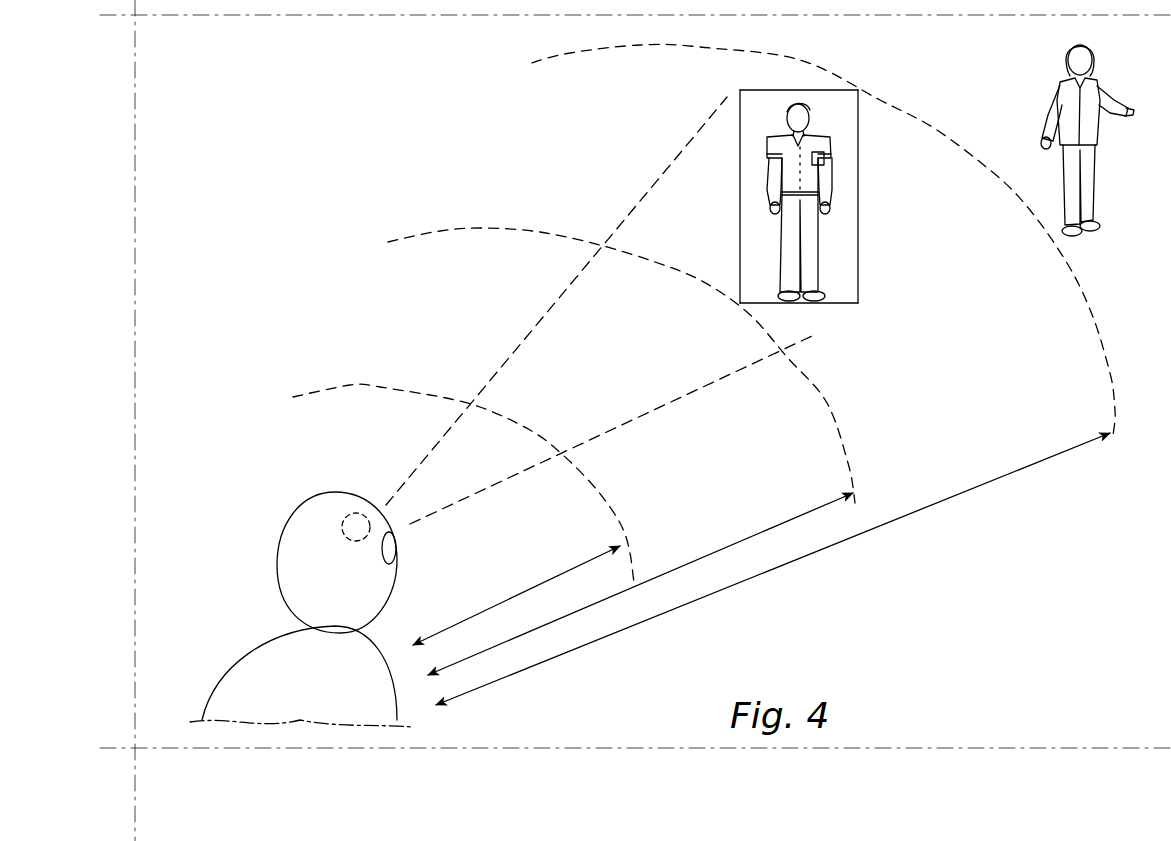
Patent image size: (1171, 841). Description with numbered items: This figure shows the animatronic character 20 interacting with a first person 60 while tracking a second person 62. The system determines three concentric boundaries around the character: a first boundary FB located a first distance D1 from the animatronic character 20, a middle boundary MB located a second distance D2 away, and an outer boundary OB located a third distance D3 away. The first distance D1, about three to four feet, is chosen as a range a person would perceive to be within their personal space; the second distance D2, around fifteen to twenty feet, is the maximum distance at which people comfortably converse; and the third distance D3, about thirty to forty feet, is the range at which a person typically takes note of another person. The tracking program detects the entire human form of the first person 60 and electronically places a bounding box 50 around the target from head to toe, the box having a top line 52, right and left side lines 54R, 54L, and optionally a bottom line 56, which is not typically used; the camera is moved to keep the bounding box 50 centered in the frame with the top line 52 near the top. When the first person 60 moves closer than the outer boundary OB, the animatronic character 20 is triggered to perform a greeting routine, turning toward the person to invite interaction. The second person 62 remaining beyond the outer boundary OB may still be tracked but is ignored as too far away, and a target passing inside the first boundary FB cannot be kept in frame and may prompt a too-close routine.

The animatronic character 20 is at (281, 556).
The bounding box 50 is at (786, 183).
The top line 52 is at (800, 183).
The left side line 54L is at (740, 200).
The right side line 54R is at (858, 193).
The bottom line 56 is at (820, 305).
The first person 60 is at (825, 235).
The second person 62 is at (1095, 131).
The first boundary FB is at (320, 393).
The middle boundary MB is at (422, 240).
The outer boundary OB is at (570, 57).
The first distance D1 is at (516, 595).
The second distance D2 is at (640, 584).
The third distance D3 is at (773, 569).